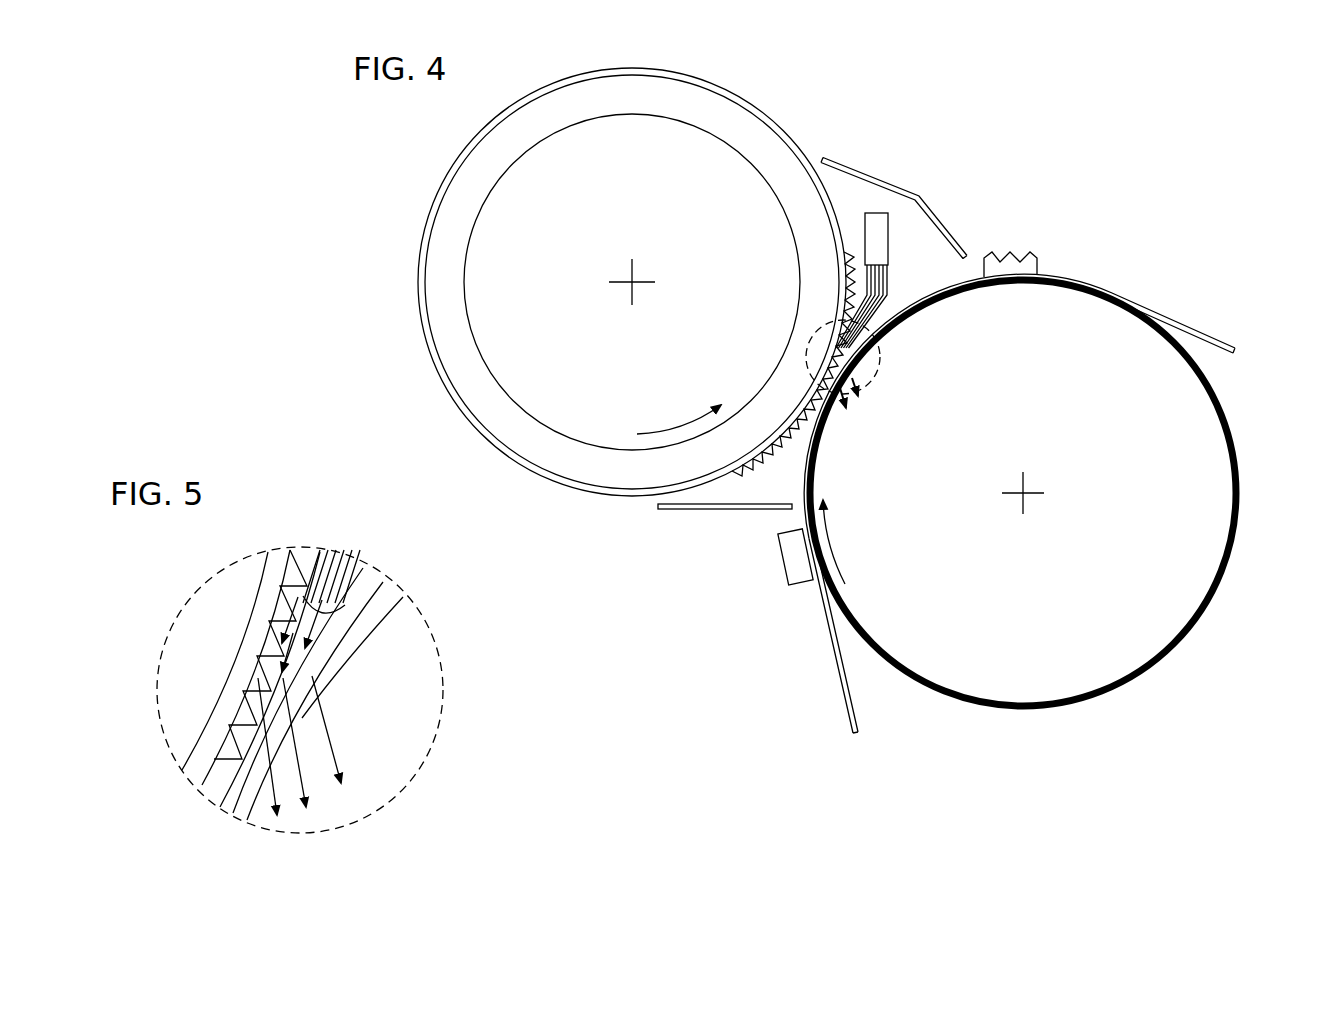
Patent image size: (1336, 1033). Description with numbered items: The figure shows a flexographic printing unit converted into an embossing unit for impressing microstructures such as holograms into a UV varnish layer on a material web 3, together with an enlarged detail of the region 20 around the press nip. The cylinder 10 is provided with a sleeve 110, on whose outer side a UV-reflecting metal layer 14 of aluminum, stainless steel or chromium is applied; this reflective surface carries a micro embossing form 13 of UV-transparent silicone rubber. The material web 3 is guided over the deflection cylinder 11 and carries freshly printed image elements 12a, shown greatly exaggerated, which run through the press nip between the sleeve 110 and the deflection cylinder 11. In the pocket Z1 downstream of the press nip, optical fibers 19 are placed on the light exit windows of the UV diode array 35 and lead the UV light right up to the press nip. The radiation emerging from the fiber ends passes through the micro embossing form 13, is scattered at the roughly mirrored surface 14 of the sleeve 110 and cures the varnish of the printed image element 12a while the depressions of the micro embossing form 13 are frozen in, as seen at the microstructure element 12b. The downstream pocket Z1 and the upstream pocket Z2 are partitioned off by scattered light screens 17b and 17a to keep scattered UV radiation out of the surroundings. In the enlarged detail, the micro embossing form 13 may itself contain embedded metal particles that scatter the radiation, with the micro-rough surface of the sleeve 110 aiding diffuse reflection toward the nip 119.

In FIG. 4, the sleeve 110 is at (462, 200).
In FIG. 4, the cylinder 10 is at (478, 292).
In FIG. 4, the micro embossing form 13 is at (575, 492).
In FIG. 5, the micro embossing form 13 is at (290, 548).
In FIG. 4, the metal layer 14 is at (620, 497).
In FIG. 4, the contact nip portion 119 is at (835, 340).
In FIG. 5, the contact nip portion 119 is at (318, 552).
In FIG. 4, the UV diode array 35 is at (876, 213).
In FIG. 4, the optical fibers 19 is at (884, 296).
In FIG. 5, the optical fibers 19 is at (347, 550).
In FIG. 4, the scattered light screen 17a is at (920, 200).
In FIG. 4, the pocket Z1 is at (915, 228).
In FIG. 4, the microstructure element 12b is at (1015, 262).
In FIG. 4, the region 20 is at (880, 356).
In FIG. 5, the region 20 is at (430, 744).
In FIG. 4, the material web 3 is at (1210, 330).
In FIG. 5, the material web 3 is at (360, 566).
In FIG. 4, the deflection cylinder 11 is at (1040, 683).
In FIG. 5, the deflection cylinder 11 is at (370, 613).
In FIG. 4, the scattered light screen 17b is at (678, 510).
In FIG. 4, the pocket Z2 is at (768, 480).
In FIG. 4, the printed image element 12a is at (782, 557).